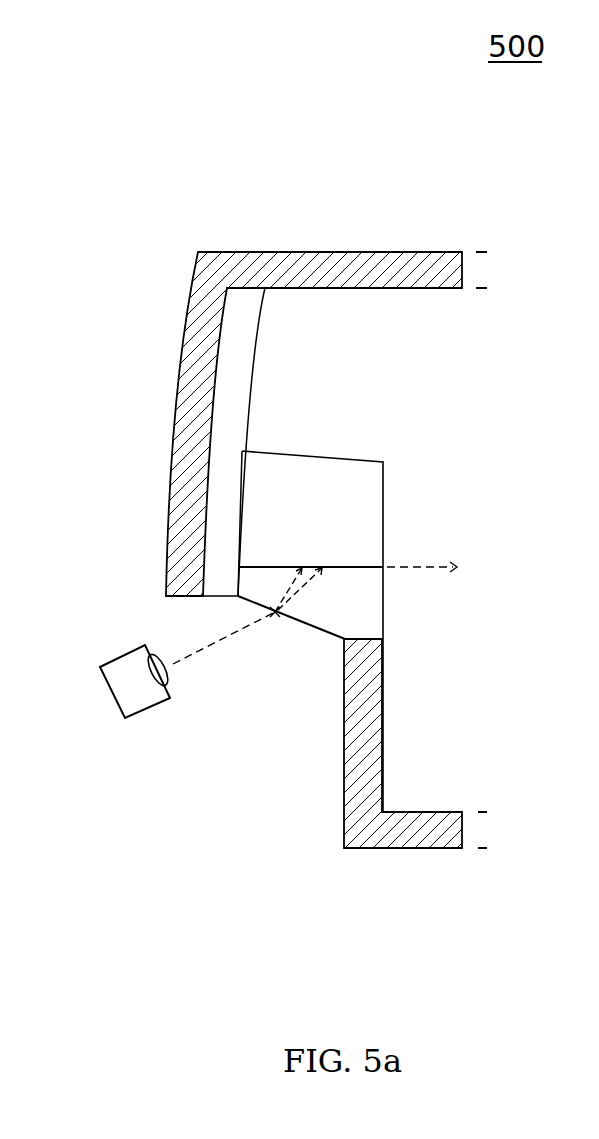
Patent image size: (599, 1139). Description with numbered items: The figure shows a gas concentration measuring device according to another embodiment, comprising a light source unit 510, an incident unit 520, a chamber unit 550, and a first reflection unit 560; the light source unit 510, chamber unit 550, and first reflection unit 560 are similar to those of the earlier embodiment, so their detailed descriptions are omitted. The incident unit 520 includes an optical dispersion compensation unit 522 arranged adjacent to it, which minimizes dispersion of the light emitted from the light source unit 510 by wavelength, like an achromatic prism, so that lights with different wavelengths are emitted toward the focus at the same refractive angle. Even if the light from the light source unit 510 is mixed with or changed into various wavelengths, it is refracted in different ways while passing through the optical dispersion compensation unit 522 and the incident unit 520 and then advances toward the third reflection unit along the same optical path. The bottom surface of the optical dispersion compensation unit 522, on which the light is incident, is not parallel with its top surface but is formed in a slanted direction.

The light source unit 510 is at (125, 688).
The incident unit 520 is at (267, 485).
The optical dispersion compensation unit 522 is at (323, 605).
The chamber unit 550 is at (205, 302).
The first reflection unit 560 is at (237, 327).